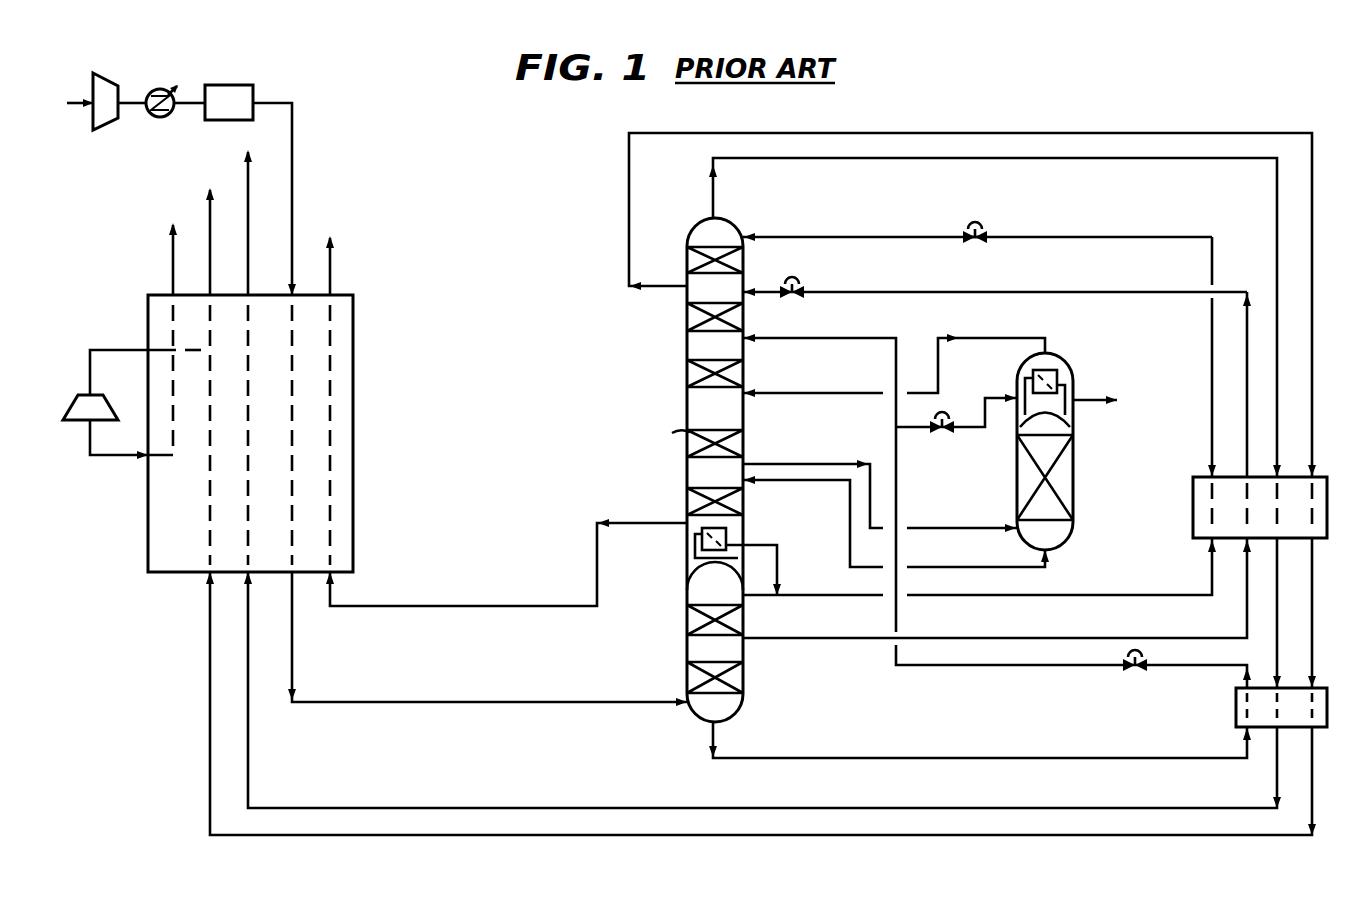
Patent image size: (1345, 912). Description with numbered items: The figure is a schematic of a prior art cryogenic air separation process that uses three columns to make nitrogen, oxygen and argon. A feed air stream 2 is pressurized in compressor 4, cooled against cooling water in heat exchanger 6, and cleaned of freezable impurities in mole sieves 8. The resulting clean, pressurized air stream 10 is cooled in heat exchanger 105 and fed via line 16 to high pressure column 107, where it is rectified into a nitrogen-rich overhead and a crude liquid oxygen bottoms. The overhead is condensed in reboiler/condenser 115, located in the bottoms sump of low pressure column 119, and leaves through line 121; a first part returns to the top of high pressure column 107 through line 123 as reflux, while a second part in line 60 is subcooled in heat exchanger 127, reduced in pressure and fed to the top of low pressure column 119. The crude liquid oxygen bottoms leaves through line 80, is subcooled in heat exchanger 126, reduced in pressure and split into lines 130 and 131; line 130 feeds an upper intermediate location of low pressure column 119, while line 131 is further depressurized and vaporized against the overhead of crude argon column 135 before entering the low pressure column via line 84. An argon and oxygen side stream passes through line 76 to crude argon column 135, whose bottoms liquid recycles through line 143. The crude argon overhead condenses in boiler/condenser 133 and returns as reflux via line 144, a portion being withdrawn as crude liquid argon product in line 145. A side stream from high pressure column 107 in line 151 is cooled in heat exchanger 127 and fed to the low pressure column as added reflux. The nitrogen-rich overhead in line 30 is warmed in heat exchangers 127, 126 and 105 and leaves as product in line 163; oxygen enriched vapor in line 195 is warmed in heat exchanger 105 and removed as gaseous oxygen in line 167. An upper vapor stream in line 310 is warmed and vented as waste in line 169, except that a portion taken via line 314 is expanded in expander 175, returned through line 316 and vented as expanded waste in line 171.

The feed air stream 2 is at (77, 94).
The compressor 4 is at (105, 84).
The heat exchanger 6 is at (154, 88).
The mole sieves 8 is at (222, 85).
The clean, pressurized air stream 10 is at (293, 206).
The heat exchanger 105 is at (148, 534).
The line 163 is at (249, 203).
The line 169 is at (211, 232).
The line 171 is at (175, 256).
The line 167 is at (331, 264).
The expander 175 is at (78, 397).
The line 314 is at (124, 350).
The line 316 is at (110, 458).
The low pressure column 119 is at (685, 342).
The high pressure column 107 is at (744, 646).
The reboiler/condenser 115 is at (740, 551).
The line 121 is at (771, 573).
The line 123 is at (757, 597).
The line 60 is at (976, 598).
The line 195 is at (649, 524).
The line 16 is at (432, 700).
The line 80 is at (1050, 761).
The line 151 is at (1066, 636).
The line 30 is at (721, 201).
The line 310 is at (631, 215).
The line 130 is at (797, 341).
The line 84 is at (798, 397).
The line 131 is at (914, 426).
The line 76 is at (808, 469).
The line 143 is at (968, 571).
The crude argon column 135 is at (1017, 460).
The boiler/condenser 133 is at (1073, 371).
The line 144 is at (1080, 398).
The line 145 is at (1088, 406).
The heat exchanger 127 is at (1228, 541).
The heat exchanger 126 is at (1236, 701).